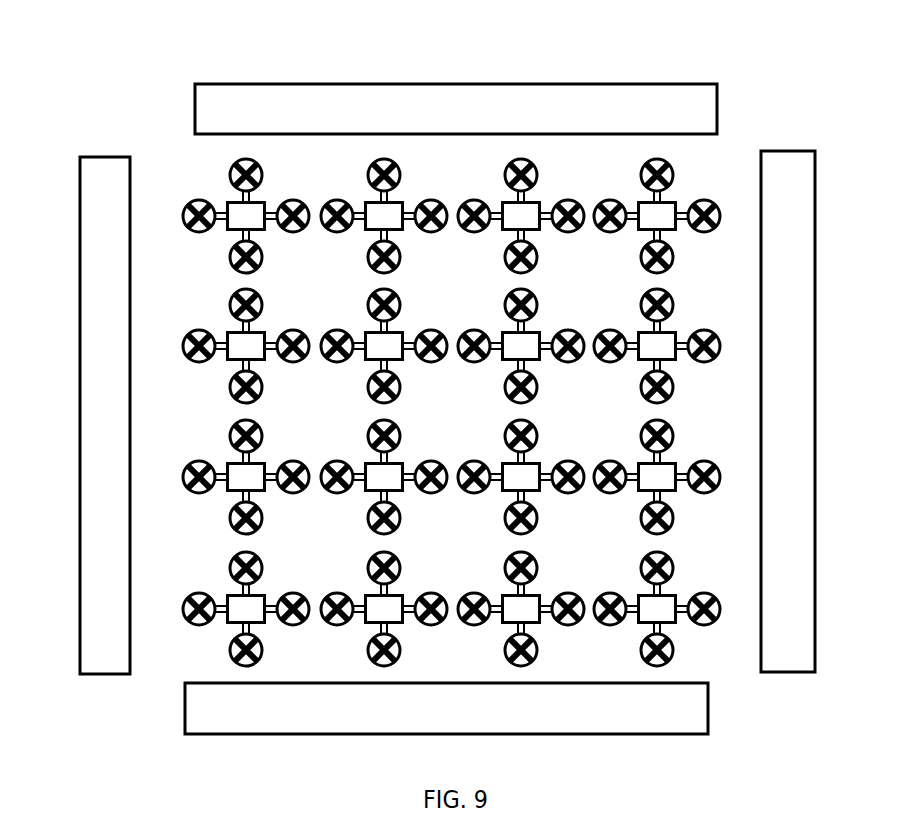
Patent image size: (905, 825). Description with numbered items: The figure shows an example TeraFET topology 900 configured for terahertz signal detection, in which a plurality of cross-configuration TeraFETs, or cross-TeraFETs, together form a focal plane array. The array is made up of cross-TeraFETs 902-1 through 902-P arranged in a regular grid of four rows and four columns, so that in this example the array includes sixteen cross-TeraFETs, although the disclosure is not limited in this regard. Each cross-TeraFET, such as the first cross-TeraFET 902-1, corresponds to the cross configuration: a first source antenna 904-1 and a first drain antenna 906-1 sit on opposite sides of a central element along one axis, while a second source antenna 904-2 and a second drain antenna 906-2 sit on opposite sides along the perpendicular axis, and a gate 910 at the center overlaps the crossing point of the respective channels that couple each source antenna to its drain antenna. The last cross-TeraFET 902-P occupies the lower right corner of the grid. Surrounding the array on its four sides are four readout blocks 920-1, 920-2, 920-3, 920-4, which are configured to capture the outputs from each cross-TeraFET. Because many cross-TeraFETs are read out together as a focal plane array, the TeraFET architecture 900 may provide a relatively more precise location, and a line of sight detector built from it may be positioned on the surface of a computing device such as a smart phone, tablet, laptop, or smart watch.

The TeraFET topology 900 is at (110, 42).
The cross-TeraFET 902-1 is at (189, 150).
The cross-TeraFET 902-P is at (714, 651).
The first source antenna 904-1 is at (208, 194).
The second source antenna 904-2 is at (247, 162).
The first drain antenna 906-1 is at (291, 198).
The second drain antenna 906-2 is at (260, 257).
The gate 910 is at (238, 213).
The readout block 920-1 is at (93, 414).
The readout block 920-2 is at (805, 453).
The readout block 920-3 is at (492, 124).
The readout block 920-4 is at (498, 721).